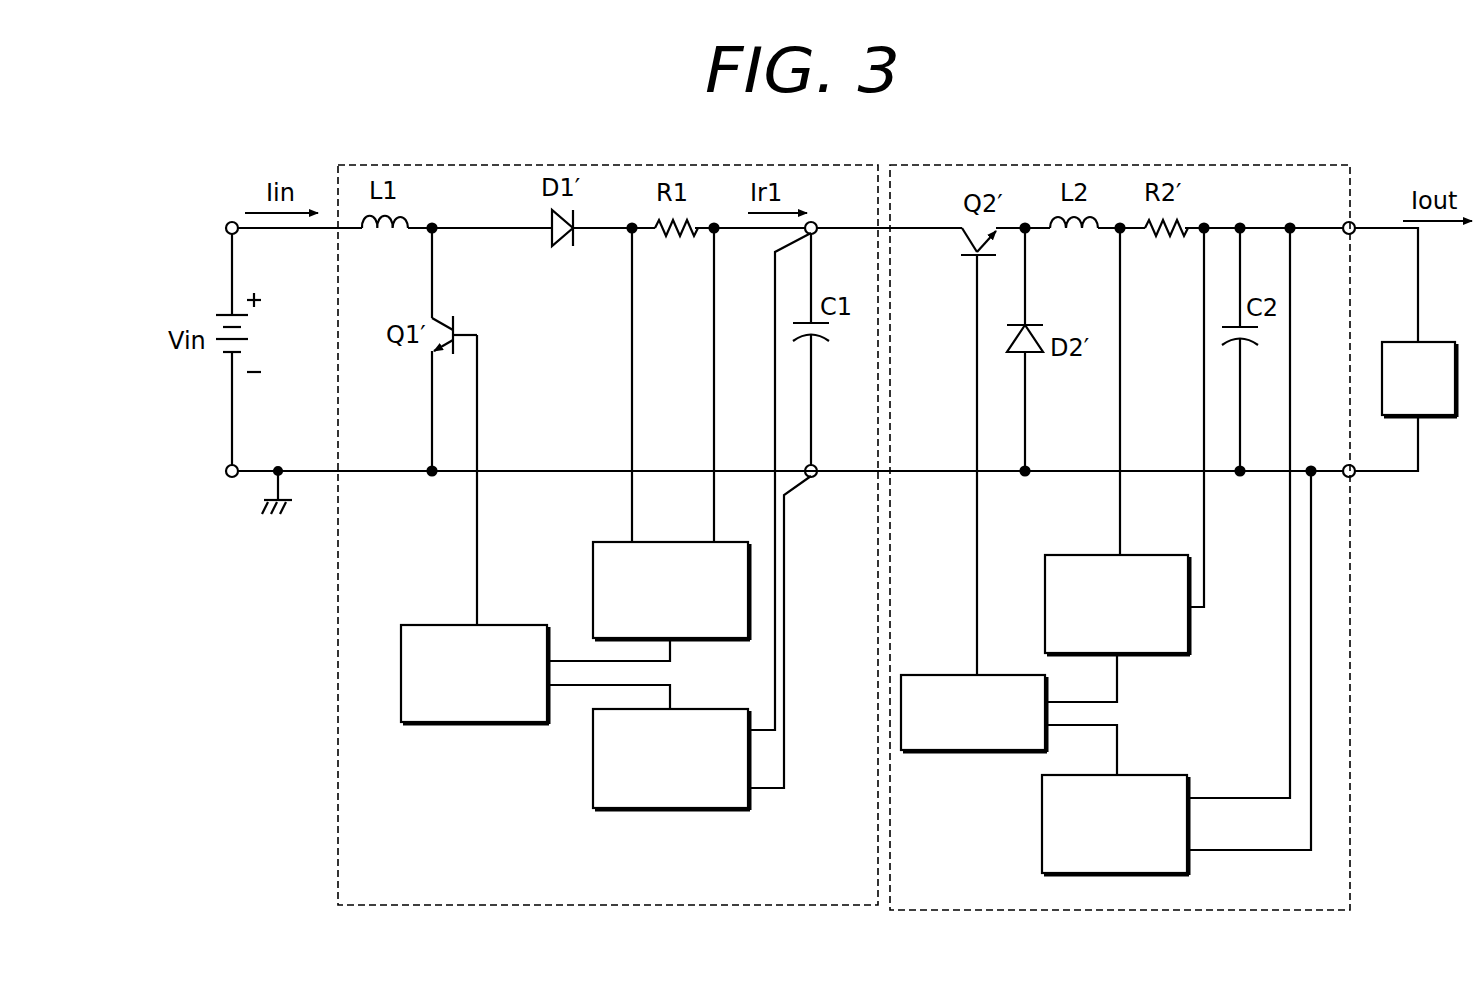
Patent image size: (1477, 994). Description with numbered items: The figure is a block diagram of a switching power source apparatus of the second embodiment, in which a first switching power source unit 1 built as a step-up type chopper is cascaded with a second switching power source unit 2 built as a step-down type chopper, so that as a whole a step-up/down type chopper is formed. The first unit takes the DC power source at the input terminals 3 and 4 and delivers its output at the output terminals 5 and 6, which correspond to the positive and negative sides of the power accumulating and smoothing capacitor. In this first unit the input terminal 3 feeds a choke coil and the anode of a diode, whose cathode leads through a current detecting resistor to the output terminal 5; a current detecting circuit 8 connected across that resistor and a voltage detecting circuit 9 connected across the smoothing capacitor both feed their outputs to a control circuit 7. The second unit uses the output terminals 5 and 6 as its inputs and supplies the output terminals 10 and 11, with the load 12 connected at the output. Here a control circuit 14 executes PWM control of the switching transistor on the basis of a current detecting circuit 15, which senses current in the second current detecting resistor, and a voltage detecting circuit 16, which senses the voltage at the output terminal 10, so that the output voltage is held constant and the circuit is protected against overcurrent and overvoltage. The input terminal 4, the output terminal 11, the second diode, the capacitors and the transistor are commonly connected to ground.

The first switching power source unit 1 is at (417, 165).
The second switching power source unit 2 is at (1308, 165).
The input terminal 3 is at (227, 232).
The input terminal 4 is at (227, 466).
The output terminal 5 is at (817, 222).
The output terminal 6 is at (814, 478).
The control circuit 7 is at (435, 624).
The current detecting circuit 8 is at (618, 542).
The voltage detecting circuit 9 is at (624, 810).
The output terminal 10 is at (1373, 210).
The output terminal 11 is at (1355, 478).
The load 12 is at (1428, 342).
The control circuit 14 is at (984, 675).
The current detecting circuit 15 is at (1155, 657).
The voltage detecting circuit 16 is at (1042, 844).